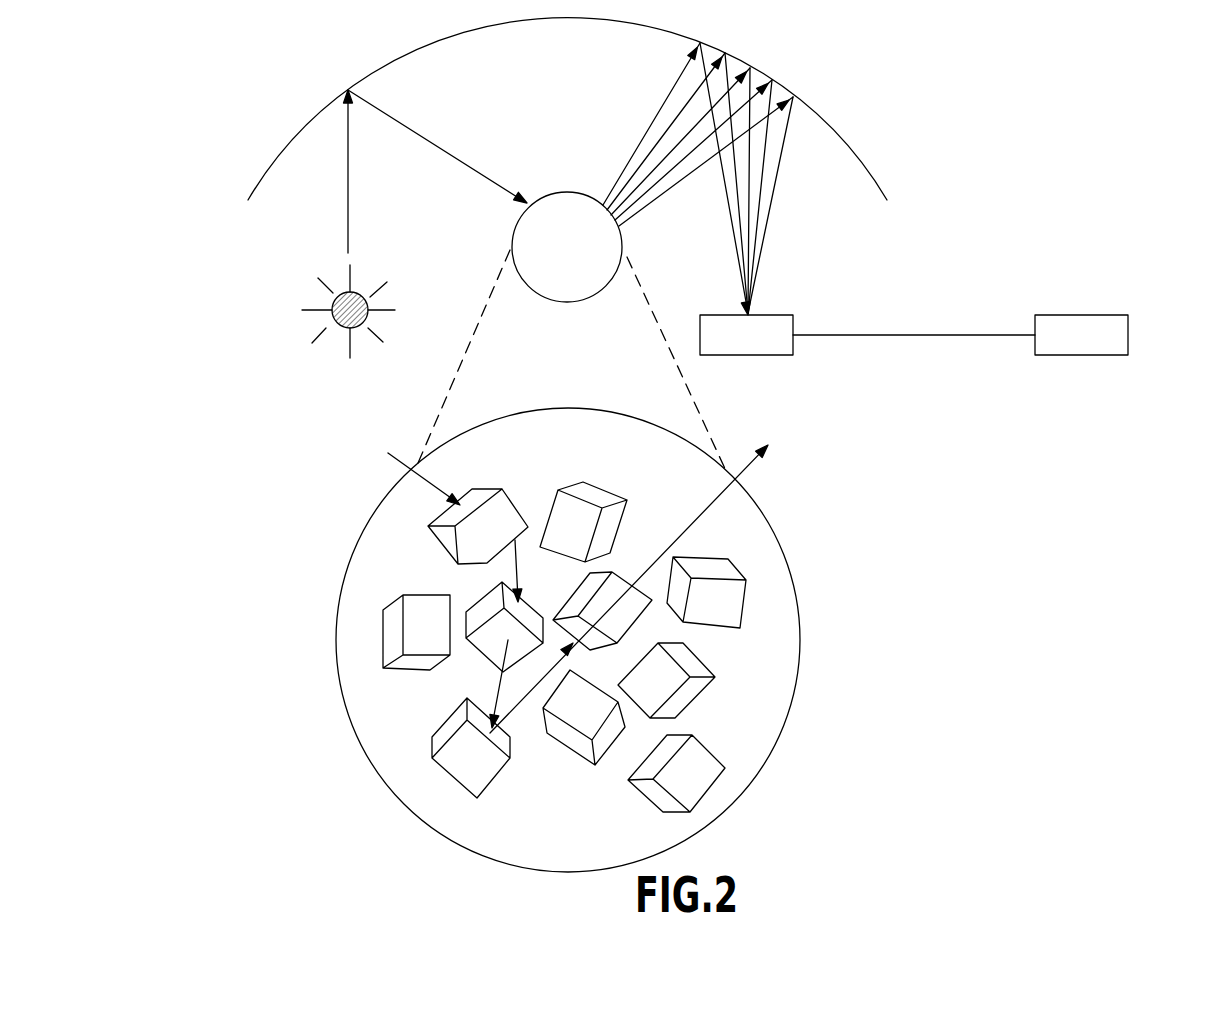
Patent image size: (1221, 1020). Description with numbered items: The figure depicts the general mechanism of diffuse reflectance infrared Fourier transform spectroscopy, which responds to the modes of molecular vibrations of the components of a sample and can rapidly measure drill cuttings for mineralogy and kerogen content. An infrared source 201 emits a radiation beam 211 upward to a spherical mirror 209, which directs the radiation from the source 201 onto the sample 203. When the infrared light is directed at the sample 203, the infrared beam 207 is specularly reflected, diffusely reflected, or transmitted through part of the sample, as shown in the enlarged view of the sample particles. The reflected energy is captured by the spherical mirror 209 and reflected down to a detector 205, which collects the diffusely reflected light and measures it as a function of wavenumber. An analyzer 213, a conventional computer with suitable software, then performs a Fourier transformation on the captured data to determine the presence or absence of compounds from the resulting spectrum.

The source 201 is at (333, 312).
The sample 203 is at (607, 290).
The detector 205 is at (715, 355).
The infrared beam 207 is at (393, 459).
The spherical mirror 209 is at (833, 131).
The radiation beam 211 is at (348, 228).
The analyzer 213 is at (1048, 355).